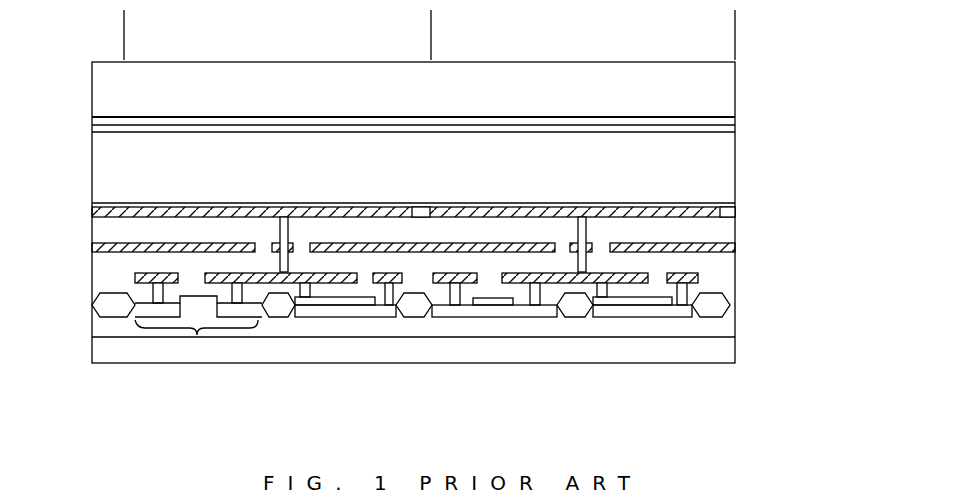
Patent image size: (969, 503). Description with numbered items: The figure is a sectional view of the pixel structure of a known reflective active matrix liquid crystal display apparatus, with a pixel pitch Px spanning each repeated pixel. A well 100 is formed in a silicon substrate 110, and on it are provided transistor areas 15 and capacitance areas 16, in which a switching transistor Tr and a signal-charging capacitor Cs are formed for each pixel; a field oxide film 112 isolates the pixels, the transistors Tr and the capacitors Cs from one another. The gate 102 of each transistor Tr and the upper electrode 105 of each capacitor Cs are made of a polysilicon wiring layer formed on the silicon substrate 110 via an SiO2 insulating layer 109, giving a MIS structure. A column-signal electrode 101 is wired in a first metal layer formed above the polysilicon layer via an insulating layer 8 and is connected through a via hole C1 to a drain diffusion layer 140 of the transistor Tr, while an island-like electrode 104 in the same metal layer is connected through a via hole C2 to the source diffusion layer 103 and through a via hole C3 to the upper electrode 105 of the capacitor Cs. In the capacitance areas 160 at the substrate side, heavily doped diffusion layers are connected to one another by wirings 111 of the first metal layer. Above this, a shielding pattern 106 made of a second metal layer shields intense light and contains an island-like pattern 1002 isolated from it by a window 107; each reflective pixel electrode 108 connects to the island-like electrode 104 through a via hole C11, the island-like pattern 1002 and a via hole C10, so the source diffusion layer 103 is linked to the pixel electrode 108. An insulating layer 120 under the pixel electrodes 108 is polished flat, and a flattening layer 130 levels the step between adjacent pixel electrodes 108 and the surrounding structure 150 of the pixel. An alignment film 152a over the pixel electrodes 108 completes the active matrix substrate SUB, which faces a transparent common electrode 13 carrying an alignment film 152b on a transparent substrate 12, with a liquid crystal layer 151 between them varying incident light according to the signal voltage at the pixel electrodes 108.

The pixel pitch Px is at (735, 30).
The transparent substrate 12 is at (425, 101).
The transparent common electrode 13 is at (722, 117).
The alignment film 152b is at (722, 130).
The liquid crystal layer 151 is at (355, 179).
The alignment film 152a is at (712, 203).
The reflective pixel electrode 108 is at (725, 212).
The flattening layer 130 is at (122, 212).
The insulating layer 120 is at (100, 233).
The shielding pattern 106 is at (532, 242).
The window 107 is at (598, 248).
The island-like pattern 1002 is at (587, 247).
The via hole C11 is at (280, 232).
The via hole C10 is at (280, 268).
The wiring 111 is at (698, 278).
The column-signal electrode 101 is at (468, 272).
The island-like electrode 104 is at (517, 272).
The insulating layer 8 is at (728, 270).
The via hole C1 is at (150, 288).
The via hole C2 is at (232, 288).
The via hole C3 is at (607, 290).
The field oxide film 112 is at (713, 307).
The drain diffusion layer 140 is at (433, 306).
The well 100 is at (267, 330).
The thin film transistor 150 is at (197, 334).
The capacitance area 160 is at (327, 305).
The switching transistor Tr is at (516, 333).
The transistor area 15 is at (506, 332).
The gate 102 is at (470, 296).
The source diffusion layer 103 is at (545, 314).
The upper electrode 105 is at (600, 301).
The signal-charging capacitor Cs is at (668, 322).
The capacitance area 16 is at (655, 332).
The SiO2 insulating layer 109 is at (683, 309).
The silicon substrate 110 is at (690, 328).
The active matrix substrate SUB is at (88, 282).